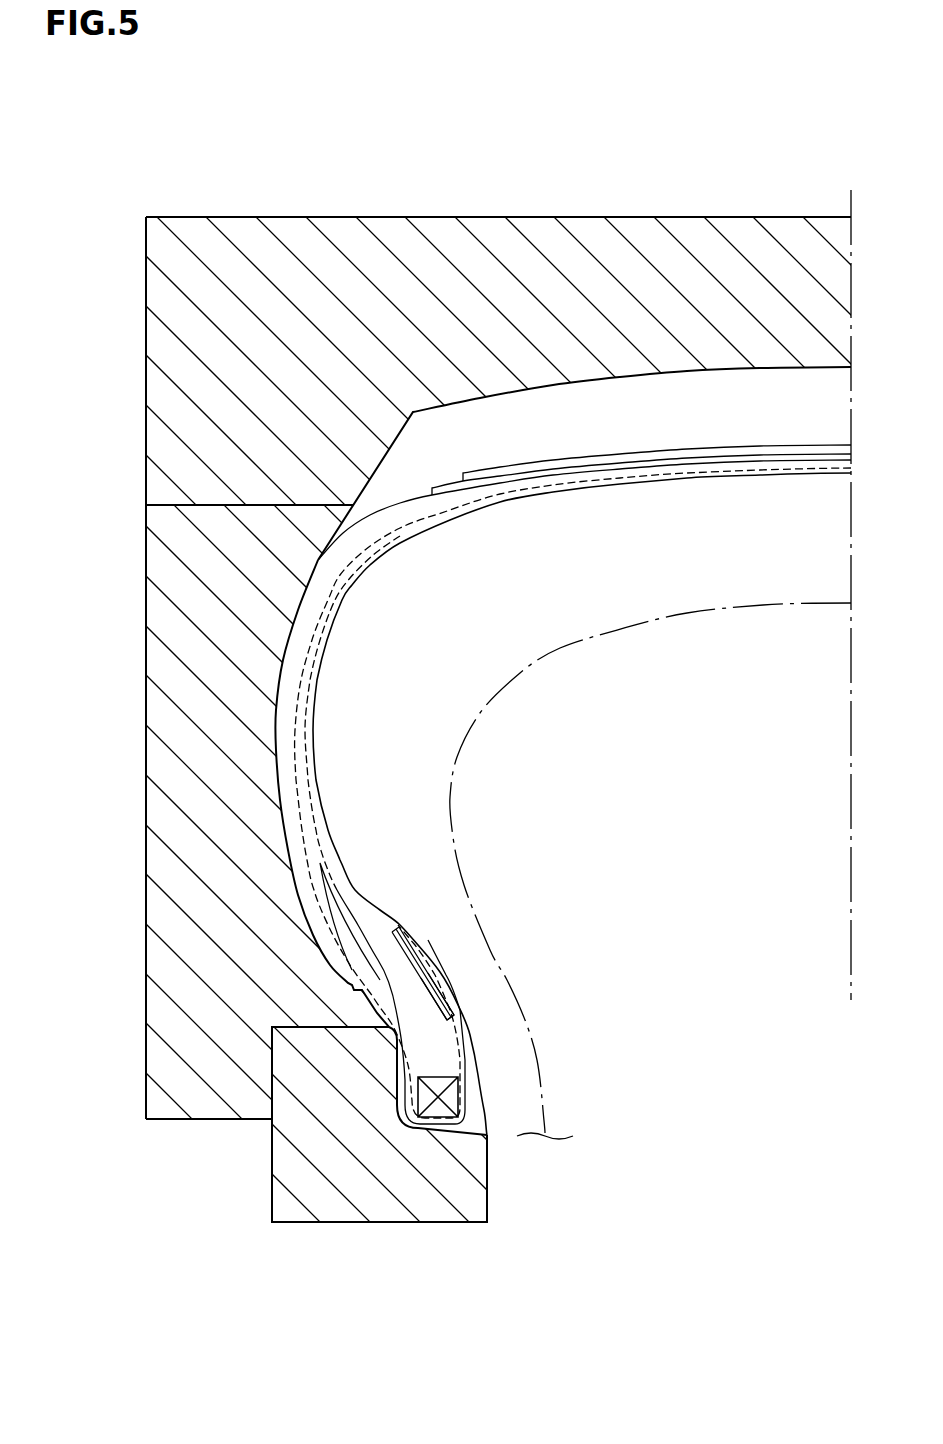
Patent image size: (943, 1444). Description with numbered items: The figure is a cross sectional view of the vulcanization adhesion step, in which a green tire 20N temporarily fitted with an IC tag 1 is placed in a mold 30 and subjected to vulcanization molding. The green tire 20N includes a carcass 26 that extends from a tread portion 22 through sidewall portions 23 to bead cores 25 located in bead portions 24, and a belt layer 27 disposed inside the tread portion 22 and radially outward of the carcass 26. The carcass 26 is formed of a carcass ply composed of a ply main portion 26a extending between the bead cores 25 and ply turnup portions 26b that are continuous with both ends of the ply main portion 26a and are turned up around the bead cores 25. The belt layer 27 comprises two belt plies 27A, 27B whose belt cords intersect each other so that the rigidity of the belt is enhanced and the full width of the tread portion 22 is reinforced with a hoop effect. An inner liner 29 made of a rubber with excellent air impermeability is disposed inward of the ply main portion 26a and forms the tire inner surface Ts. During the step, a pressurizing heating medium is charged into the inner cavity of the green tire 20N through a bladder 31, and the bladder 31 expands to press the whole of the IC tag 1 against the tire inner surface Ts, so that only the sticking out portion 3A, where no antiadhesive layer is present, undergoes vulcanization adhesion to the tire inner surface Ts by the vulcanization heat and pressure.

The IC tag 1 is at (573, 878).
The sticking out portion 3A is at (462, 997).
The green tire 20N is at (550, 422).
The tread portion 22 is at (471, 694).
The sidewall portion 23 is at (287, 688).
The bead portion 24 is at (405, 1083).
The bead core 25 is at (438, 1110).
The carcass 26 is at (573, 793).
The ply main portion 26a is at (310, 800).
The ply turnup portion 26b is at (318, 850).
The belt layer 27 is at (641, 592).
The belt ply 27A is at (803, 455).
The belt ply 27B is at (719, 450).
The inner liner 29 is at (397, 923).
The mold 30 is at (471, 725).
The bladder 31 is at (510, 680).
The tire inner surface Ts is at (478, 1070).